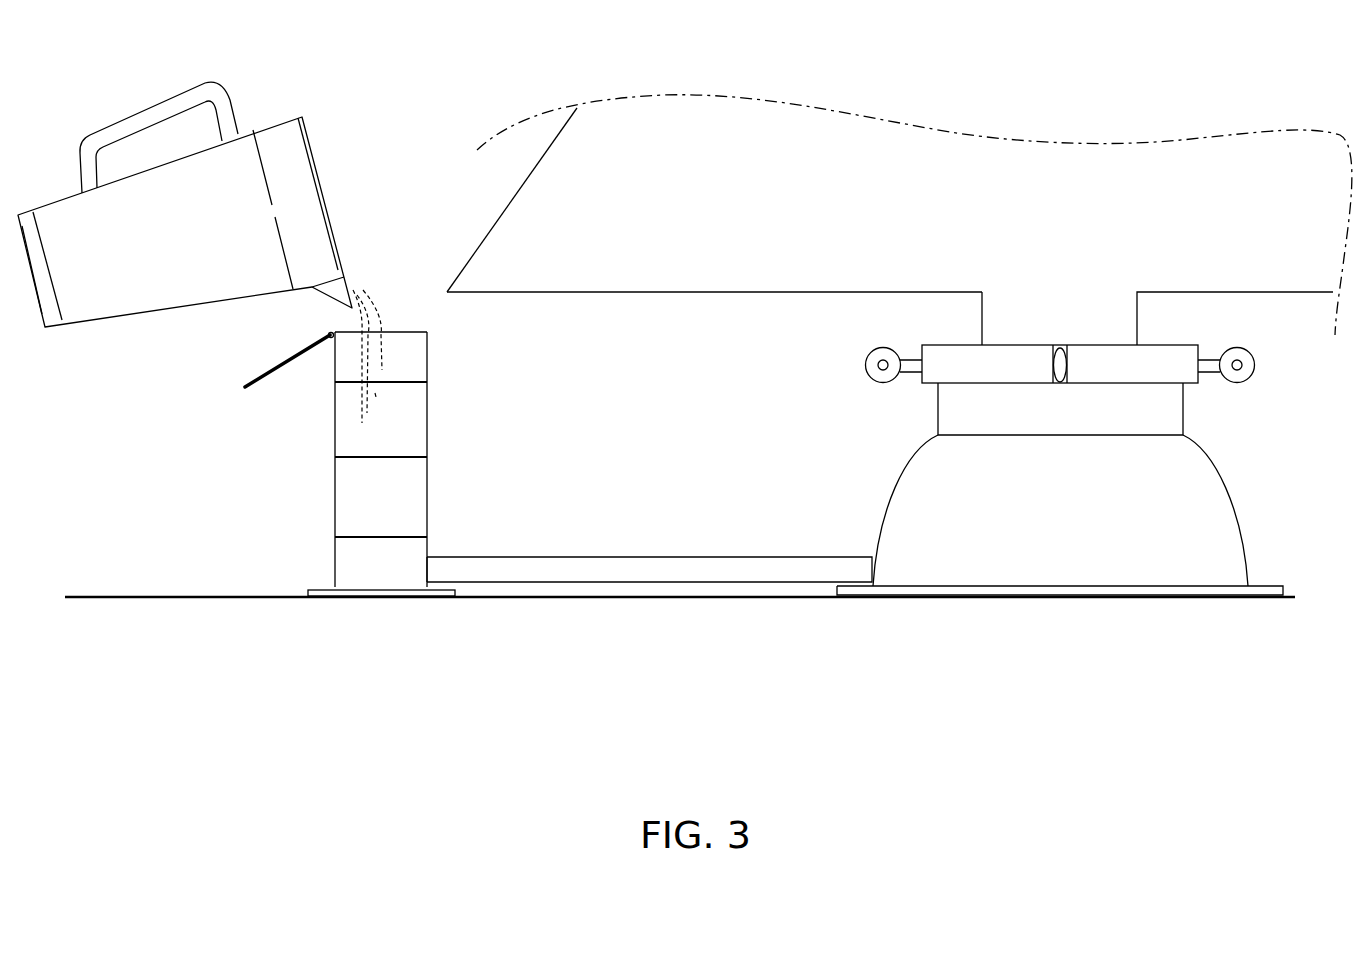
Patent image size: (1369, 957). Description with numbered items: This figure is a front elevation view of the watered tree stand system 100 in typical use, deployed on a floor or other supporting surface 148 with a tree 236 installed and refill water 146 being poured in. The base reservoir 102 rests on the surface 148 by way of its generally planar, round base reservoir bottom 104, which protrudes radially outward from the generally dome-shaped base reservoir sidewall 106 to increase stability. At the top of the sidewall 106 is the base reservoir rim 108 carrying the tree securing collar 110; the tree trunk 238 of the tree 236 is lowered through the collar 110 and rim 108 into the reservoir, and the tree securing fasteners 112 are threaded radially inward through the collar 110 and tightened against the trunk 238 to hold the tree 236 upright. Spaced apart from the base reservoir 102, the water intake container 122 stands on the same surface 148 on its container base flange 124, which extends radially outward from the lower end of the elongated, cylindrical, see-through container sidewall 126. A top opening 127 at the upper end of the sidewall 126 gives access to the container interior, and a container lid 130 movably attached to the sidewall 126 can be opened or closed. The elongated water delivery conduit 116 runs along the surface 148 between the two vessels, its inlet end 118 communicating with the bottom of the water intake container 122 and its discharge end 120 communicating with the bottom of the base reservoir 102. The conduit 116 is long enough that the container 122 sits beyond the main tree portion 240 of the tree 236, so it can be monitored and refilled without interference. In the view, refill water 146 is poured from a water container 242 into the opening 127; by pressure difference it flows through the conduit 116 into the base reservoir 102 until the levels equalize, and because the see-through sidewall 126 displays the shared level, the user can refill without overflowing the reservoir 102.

The watered tree stand system 100 is at (716, 450).
The base reservoir 102 is at (1250, 508).
The base reservoir bottom 104 is at (1272, 586).
The base reservoir sidewall 106 is at (1195, 475).
The base reservoir rim 108 is at (950, 411).
The tree securing collar 110 is at (1168, 357).
The tree securing fasteners 112 is at (867, 363).
The water delivery conduit 116 is at (643, 567).
The inlet end 118 is at (428, 575).
The discharge end 120 is at (875, 575).
The water intake container 122 is at (445, 412).
The container base flange 124 is at (313, 589).
The container sidewall 126 is at (345, 494).
The top opening 127 is at (418, 316).
The container lid 130 is at (247, 383).
The refill water 146 is at (362, 300).
The supporting surface 148 is at (150, 596).
The tree 236 is at (500, 192).
The tree trunk 238 is at (988, 320).
The main tree portion 240 is at (700, 275).
The water container 242 is at (94, 295).